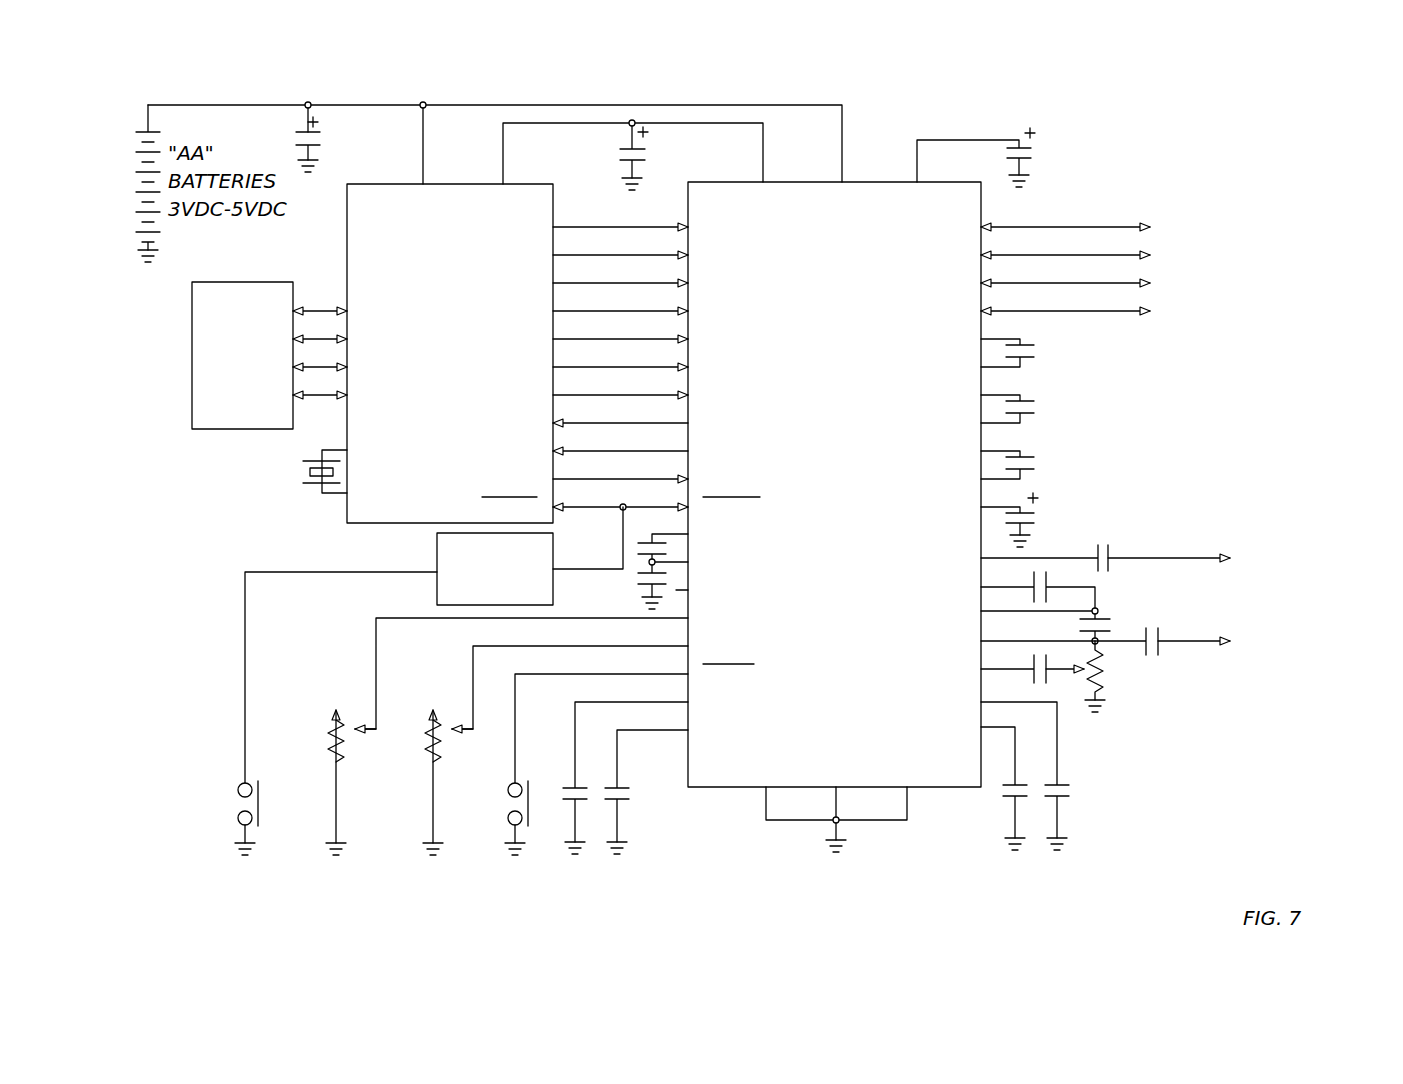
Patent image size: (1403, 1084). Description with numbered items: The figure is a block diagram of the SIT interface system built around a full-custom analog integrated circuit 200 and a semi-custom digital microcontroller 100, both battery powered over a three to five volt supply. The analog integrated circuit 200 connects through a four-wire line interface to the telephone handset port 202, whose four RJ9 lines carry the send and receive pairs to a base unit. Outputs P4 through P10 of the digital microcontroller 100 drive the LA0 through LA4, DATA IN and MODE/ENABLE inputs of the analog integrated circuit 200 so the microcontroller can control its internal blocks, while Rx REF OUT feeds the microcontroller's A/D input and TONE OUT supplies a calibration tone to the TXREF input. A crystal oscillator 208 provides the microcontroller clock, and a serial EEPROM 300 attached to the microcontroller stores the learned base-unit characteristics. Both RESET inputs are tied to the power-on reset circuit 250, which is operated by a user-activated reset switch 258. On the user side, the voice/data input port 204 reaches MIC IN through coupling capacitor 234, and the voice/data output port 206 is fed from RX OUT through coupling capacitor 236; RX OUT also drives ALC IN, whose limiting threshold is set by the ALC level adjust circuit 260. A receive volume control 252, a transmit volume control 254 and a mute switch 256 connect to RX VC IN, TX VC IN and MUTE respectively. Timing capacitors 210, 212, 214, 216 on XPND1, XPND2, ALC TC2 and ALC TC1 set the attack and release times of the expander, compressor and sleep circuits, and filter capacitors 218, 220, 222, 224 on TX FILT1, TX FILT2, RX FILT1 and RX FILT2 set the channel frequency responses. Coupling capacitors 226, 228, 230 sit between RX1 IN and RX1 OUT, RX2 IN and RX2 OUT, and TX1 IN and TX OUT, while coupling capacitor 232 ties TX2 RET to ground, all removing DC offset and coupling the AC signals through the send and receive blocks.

The digital microcontroller 100 is at (525, 184).
The analog integrated circuit 200 is at (873, 182).
The telephone handset port 202 is at (1192, 112).
The voice/data input port 204 is at (1292, 530).
The voice/data output port 206 is at (1292, 620).
The crystal oscillator 208 is at (304, 482).
The timing capacitor 210 is at (566, 786).
The timing capacitor 212 is at (624, 786).
The timing capacitor 214 is at (1003, 806).
The timing capacitor 216 is at (1070, 806).
The filter capacitor 218 is at (1030, 162).
The filter capacitor 220 is at (640, 586).
The filter capacitor 222 is at (1050, 581).
The filter capacitor 224 is at (1105, 612).
The coupling capacitor 226 is at (1024, 344).
The coupling capacitor 228 is at (1024, 401).
The coupling capacitor 230 is at (1024, 457).
The coupling capacitor 232 is at (1030, 513).
The coupling capacitor 234 is at (1108, 551).
The coupling capacitor 236 is at (1158, 641).
The power-on reset circuit 250 is at (437, 536).
The receive volume control 252 is at (331, 757).
The transmit volume control 254 is at (428, 757).
The mute switch 256 is at (499, 831).
The reset switch 258 is at (222, 831).
The ALC level adjust circuit 260 is at (1098, 704).
The serial EEPROM 300 is at (192, 334).